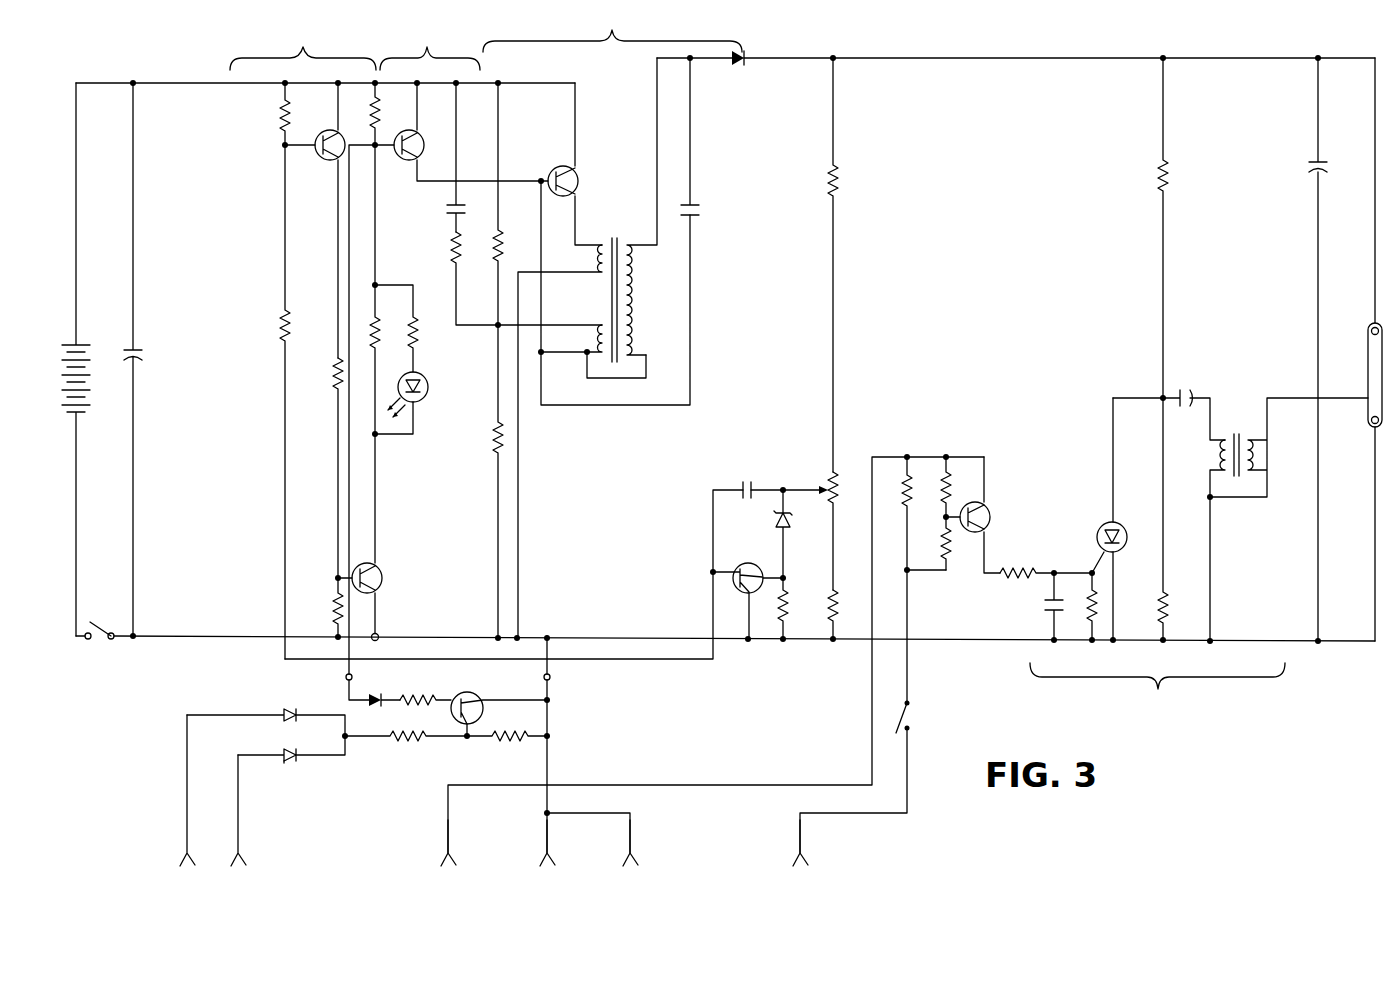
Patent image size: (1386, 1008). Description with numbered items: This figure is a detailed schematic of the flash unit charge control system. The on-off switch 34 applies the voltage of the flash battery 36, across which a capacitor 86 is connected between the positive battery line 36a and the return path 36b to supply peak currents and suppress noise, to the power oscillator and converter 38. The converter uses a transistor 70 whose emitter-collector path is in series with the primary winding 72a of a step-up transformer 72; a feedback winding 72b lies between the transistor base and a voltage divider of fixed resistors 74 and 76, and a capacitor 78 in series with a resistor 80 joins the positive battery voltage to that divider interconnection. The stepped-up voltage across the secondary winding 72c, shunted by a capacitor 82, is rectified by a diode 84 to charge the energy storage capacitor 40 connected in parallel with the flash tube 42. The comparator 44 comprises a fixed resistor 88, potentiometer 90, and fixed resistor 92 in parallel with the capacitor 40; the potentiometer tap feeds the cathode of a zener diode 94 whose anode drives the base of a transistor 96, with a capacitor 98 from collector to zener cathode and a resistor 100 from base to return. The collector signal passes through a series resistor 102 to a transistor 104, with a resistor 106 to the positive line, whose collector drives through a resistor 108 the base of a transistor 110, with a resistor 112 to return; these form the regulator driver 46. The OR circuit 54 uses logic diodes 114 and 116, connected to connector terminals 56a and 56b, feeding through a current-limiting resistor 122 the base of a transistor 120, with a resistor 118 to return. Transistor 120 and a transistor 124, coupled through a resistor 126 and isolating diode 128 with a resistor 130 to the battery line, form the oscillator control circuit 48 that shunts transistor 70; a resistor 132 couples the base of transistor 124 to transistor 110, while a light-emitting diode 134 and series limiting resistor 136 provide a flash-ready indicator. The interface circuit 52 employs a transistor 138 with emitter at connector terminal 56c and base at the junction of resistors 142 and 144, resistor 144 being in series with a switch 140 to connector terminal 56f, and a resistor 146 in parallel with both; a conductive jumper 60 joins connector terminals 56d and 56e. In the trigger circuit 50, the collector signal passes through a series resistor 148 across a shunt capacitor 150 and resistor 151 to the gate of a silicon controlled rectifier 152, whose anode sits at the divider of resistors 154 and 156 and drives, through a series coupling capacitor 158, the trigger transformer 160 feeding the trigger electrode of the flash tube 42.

The on-off switch 34 is at (100, 645).
The flash battery 36 is at (60, 366).
The positive battery line 36a is at (178, 81).
The return path 36b is at (645, 636).
The power oscillator and converter 38 is at (612, 28).
The energy storage capacitor 40 is at (1310, 168).
The flash tube 42 is at (1366, 325).
The comparator 44 is at (787, 465).
The regulator driver 46 is at (303, 48).
The oscillator control circuit 48 is at (375, 802).
The trigger circuit 50 is at (1157, 689).
The interface circuit 52 is at (925, 448).
The OR circuit 54 is at (283, 772).
The connector terminal 56a is at (180, 851).
The connector terminal 56b is at (248, 851).
The connector terminal 56c is at (440, 851).
The connector terminal 56d is at (540, 851).
The connector terminal 56e is at (638, 851).
The connector terminal 56f is at (808, 851).
The conductive jumper 60 is at (598, 812).
The transistor 70 is at (577, 165).
The step-up transformer 72 is at (614, 240).
The primary winding 72a is at (600, 262).
The feedback winding 72b is at (600, 334).
The secondary winding 72c is at (636, 290).
The fixed resistor 74 is at (500, 240).
The fixed resistor 76 is at (495, 440).
The capacitor 78 is at (447, 210).
The resistor 80 is at (452, 248).
The capacitor 82 is at (697, 208).
The diode 84 is at (748, 52).
The capacitor 86 is at (125, 348).
The fixed resistor 88 is at (828, 183).
The potentiometer 90 is at (834, 478).
The fixed resistor 92 is at (828, 605).
The zener diode 94 is at (776, 520).
The transistor 96 is at (756, 563).
The capacitor 98 is at (747, 480).
The resistor 100 is at (780, 605).
The series resistor 102 is at (288, 322).
The transistor 104 is at (322, 160).
The resistor 106 is at (283, 118).
The resistor 108 is at (335, 378).
The transistor 110 is at (382, 572).
The resistor 112 is at (335, 608).
The logic diode 114 is at (283, 710).
The logic diode 116 is at (283, 750).
The resistor 118 is at (500, 742).
The transistor 120 is at (467, 692).
The current-limiting resistor 122 is at (400, 742).
The transistor 124 is at (396, 158).
The resistor 126 is at (430, 696).
The isolating diode 128 is at (375, 694).
The resistor 130 is at (378, 104).
The resistor 132 is at (394, 291).
The light-emitting diode 134 is at (428, 392).
The series limiting resistor 136 is at (420, 330).
The transistor 138 is at (986, 508).
The switch 140 is at (910, 722).
The resistor 142 is at (947, 488).
The resistor 144 is at (949, 545).
The resistor 146 is at (905, 490).
The series resistor 148 is at (1020, 573).
The shunt capacitor 150 is at (1045, 605).
The resistor 151 is at (1097, 600).
The silicon controlled rectifier 152 is at (1118, 522).
The resistor 154 is at (1160, 178).
The resistor 156 is at (1168, 592).
The series coupling capacitor 158 is at (1183, 390).
The trigger transformer 160 is at (1236, 430).